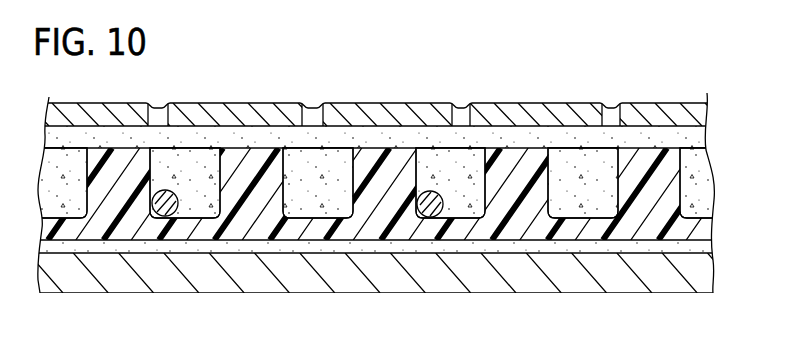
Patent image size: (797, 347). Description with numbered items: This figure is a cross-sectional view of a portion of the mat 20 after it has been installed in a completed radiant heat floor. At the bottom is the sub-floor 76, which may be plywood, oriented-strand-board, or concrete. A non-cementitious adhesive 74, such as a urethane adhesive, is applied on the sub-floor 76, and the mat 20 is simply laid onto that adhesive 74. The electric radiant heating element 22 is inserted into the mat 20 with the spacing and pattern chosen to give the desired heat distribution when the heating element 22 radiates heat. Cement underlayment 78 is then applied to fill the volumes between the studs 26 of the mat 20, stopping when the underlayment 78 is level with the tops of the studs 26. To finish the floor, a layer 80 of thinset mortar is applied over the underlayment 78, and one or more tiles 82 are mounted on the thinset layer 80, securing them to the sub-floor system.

The mat 20 is at (252, 205).
The electric radiant heating element 22 is at (178, 193).
The studs 26 is at (273, 150).
The urethane adhesive 74 is at (697, 247).
The sub-floor 76 is at (700, 273).
The cement underlayment 78 is at (398, 149).
The layer of thinset mortar 80 is at (600, 138).
The tiles 82 is at (650, 103).